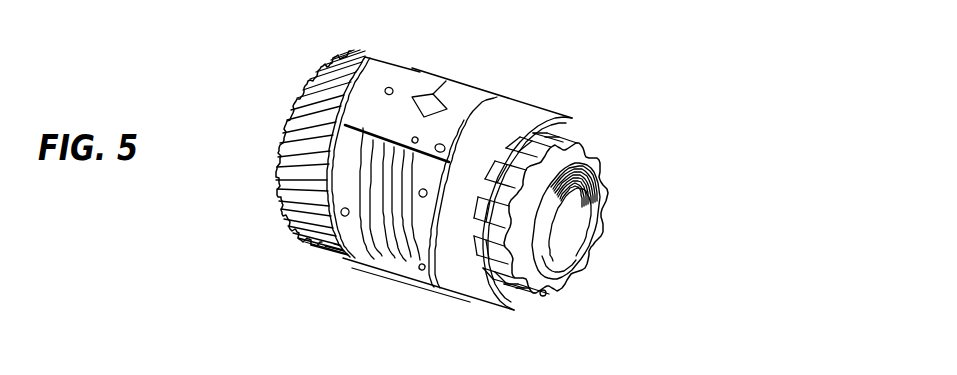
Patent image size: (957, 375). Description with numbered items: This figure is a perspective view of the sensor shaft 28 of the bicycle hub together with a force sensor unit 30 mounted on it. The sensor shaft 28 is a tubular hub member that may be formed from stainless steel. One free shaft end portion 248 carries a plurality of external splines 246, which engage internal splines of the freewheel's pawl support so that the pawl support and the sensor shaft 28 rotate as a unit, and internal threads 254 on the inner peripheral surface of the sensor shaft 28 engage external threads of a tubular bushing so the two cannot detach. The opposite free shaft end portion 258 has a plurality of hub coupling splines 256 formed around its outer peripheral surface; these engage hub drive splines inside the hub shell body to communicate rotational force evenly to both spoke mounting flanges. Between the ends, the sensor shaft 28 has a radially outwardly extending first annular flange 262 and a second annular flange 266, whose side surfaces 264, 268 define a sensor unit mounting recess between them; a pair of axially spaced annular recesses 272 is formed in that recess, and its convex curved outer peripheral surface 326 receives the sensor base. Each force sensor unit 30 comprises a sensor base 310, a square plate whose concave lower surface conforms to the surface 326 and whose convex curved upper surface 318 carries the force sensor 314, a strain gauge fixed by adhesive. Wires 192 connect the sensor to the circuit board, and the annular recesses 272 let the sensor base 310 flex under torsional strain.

The hub coupling splines 256 is at (338, 53).
The opposite free shaft end portion 258 is at (289, 142).
The convex curved outer peripheral surface 326 is at (347, 180).
The second annular flange 266 is at (307, 217).
The side surface 268 is at (323, 240).
The annular recesses 272 is at (380, 260).
The side surface 264 is at (408, 287).
The wires 192 is at (417, 71).
The force sensor 314 is at (428, 139).
The convex curved upper surface 318 is at (458, 95).
The sensor base 310 is at (476, 185).
The force sensor unit 30 is at (476, 185).
The first annular flange 262 is at (523, 120).
The free shaft end portion 248 is at (564, 223).
The external splines 246 is at (564, 213).
The internal threads 254 is at (560, 228).
The sensor shaft 28 is at (427, 180).